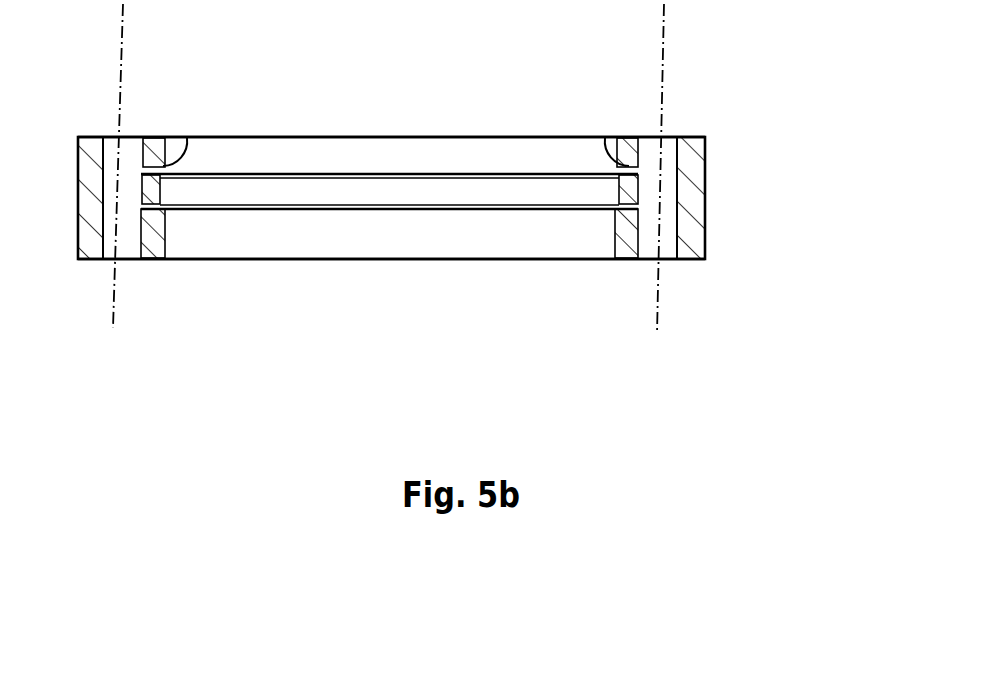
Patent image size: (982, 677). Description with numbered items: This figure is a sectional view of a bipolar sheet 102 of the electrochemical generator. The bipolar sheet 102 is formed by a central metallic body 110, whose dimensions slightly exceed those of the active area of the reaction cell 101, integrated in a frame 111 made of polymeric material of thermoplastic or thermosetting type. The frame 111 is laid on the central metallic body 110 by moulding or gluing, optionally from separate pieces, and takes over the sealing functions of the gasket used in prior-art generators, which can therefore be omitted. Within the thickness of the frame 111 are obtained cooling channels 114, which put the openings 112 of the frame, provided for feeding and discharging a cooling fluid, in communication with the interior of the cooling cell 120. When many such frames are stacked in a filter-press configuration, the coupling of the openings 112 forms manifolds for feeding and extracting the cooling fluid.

The reaction cell 101 is at (280, 270).
The bipolar sheet 102 is at (722, 215).
The central metallic body 110 is at (465, 193).
The frame 111 is at (86, 250).
The openings 112 is at (127, 157).
The cooling channels 114 is at (188, 133).
The cooling cell 120 is at (358, 132).